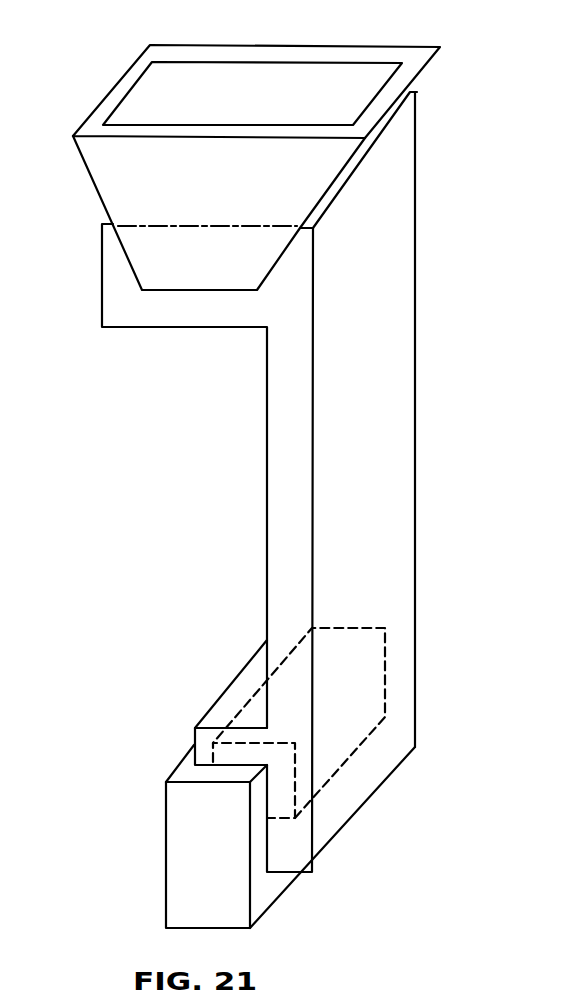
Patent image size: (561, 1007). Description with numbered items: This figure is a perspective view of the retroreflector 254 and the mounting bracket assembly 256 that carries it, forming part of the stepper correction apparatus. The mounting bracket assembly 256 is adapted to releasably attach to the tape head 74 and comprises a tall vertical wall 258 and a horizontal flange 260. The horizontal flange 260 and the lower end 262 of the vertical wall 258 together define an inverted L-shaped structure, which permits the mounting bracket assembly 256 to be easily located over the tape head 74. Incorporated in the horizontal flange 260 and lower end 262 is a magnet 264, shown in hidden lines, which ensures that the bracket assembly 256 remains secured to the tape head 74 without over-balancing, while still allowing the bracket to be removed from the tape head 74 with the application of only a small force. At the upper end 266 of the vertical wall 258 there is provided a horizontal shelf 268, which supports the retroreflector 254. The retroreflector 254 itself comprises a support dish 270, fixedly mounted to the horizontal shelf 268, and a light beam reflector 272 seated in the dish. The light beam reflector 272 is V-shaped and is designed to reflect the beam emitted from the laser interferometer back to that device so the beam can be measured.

The retroreflector 254 is at (114, 97).
The light beam reflector 272 is at (233, 73).
The upper end 266 is at (404, 131).
The support dish 270 is at (97, 188).
The horizontal shelf 268 is at (148, 318).
The vertical wall 258 is at (401, 402).
The mounting bracket assembly 256 is at (108, 559).
The horizontal flange 260 is at (220, 707).
The lower end 262 is at (378, 786).
The magnet 264 is at (278, 802).
The tape head 74 is at (167, 843).